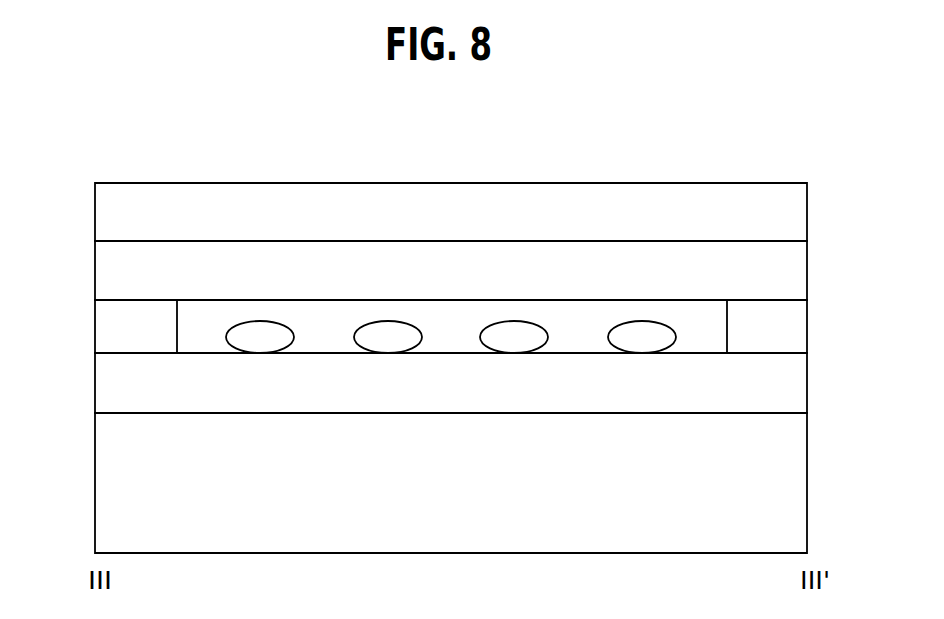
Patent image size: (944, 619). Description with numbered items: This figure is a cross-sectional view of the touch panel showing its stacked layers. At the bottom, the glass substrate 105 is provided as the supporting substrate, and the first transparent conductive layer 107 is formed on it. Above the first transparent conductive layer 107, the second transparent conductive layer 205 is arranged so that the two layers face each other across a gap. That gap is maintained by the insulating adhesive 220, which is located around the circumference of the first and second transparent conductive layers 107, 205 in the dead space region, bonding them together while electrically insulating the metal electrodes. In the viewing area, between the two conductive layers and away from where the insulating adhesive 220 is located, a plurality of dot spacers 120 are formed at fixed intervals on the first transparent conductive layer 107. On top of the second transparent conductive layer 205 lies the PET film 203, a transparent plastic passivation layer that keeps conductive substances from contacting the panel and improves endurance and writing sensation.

The dot spacers 120 is at (510, 332).
The PET film 203 is at (117, 218).
The second transparent conductive layer 205 is at (117, 275).
The insulating adhesive 220 is at (117, 332).
The first transparent conductive layer 107 is at (119, 394).
The glass substrate 105 is at (119, 490).